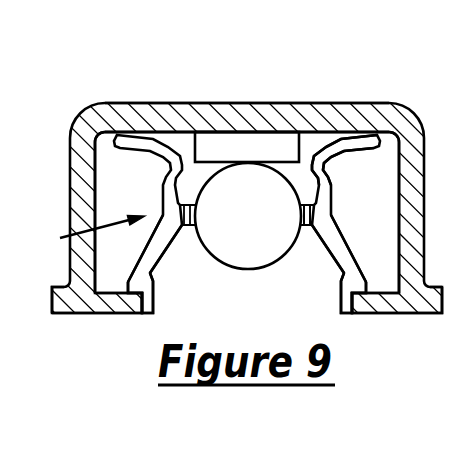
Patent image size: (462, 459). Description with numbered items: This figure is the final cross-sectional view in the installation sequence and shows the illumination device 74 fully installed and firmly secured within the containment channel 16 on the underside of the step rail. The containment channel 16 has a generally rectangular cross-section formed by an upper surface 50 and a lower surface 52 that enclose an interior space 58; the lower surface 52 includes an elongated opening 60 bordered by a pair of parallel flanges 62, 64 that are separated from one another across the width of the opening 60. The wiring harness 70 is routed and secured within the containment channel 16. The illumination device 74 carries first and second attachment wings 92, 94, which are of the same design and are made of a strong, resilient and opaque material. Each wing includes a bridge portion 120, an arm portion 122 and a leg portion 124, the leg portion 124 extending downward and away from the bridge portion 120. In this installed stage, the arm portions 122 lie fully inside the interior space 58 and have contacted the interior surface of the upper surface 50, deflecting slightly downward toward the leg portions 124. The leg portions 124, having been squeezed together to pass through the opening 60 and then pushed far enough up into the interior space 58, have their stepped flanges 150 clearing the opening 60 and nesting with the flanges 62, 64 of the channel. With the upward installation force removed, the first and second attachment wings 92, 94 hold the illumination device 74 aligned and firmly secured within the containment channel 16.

The containment channel 16 is at (397, 110).
The upper surface 50 is at (302, 107).
The lower surface 52 is at (78, 300).
The interior space 58 is at (140, 187).
The opening 60 is at (183, 308).
The flange 62 is at (362, 305).
The flange 64 is at (133, 305).
The wiring harness 70 is at (213, 142).
The illumination device 74 is at (84, 235).
The first attachment wing 92 is at (329, 178).
The second attachment wing 94 is at (162, 257).
The bridge portion 120 is at (314, 216).
The arm portion 122 is at (358, 133).
The leg portion 124 is at (343, 277).
The stepped flange 150 is at (347, 300).